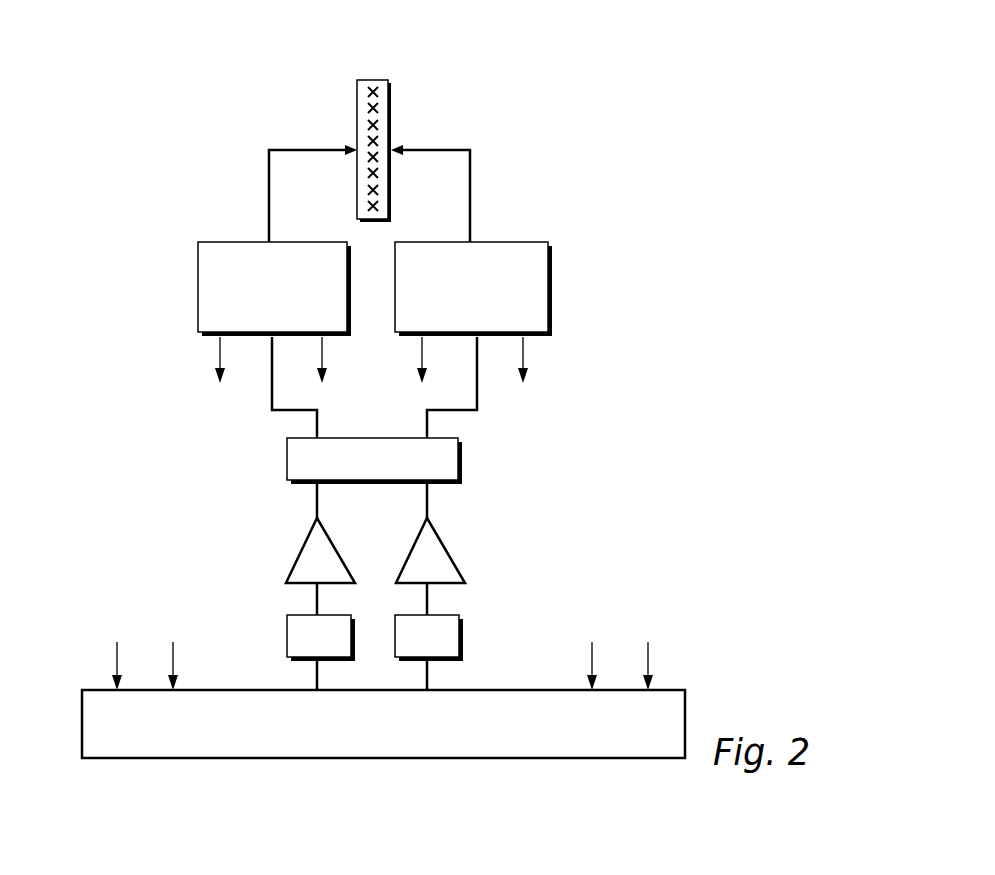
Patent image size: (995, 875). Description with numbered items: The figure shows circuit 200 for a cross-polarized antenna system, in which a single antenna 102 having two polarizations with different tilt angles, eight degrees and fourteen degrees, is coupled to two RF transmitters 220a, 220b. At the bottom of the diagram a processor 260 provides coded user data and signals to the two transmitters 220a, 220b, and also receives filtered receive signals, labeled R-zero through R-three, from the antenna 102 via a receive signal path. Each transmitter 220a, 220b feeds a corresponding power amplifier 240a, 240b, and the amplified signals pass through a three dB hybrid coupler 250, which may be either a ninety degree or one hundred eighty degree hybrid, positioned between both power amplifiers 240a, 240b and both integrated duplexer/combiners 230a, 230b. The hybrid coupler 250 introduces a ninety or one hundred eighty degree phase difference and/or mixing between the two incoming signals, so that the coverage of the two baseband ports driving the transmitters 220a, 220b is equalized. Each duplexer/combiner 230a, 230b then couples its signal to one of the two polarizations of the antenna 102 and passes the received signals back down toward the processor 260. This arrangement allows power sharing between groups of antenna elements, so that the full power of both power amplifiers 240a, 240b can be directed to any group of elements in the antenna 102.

The circuit 200 is at (598, 76).
The antenna 102 is at (383, 78).
The integrated duplexer/combiner 230a is at (198, 282).
The integrated duplexer/combiner 230b is at (553, 282).
The hybrid coupler 250 is at (287, 460).
The power amplifier 240a is at (302, 551).
The power amplifier 240b is at (443, 551).
The RF transmitter 220a is at (287, 628).
The RF transmitter 220b is at (462, 628).
The processor 260 is at (82, 714).